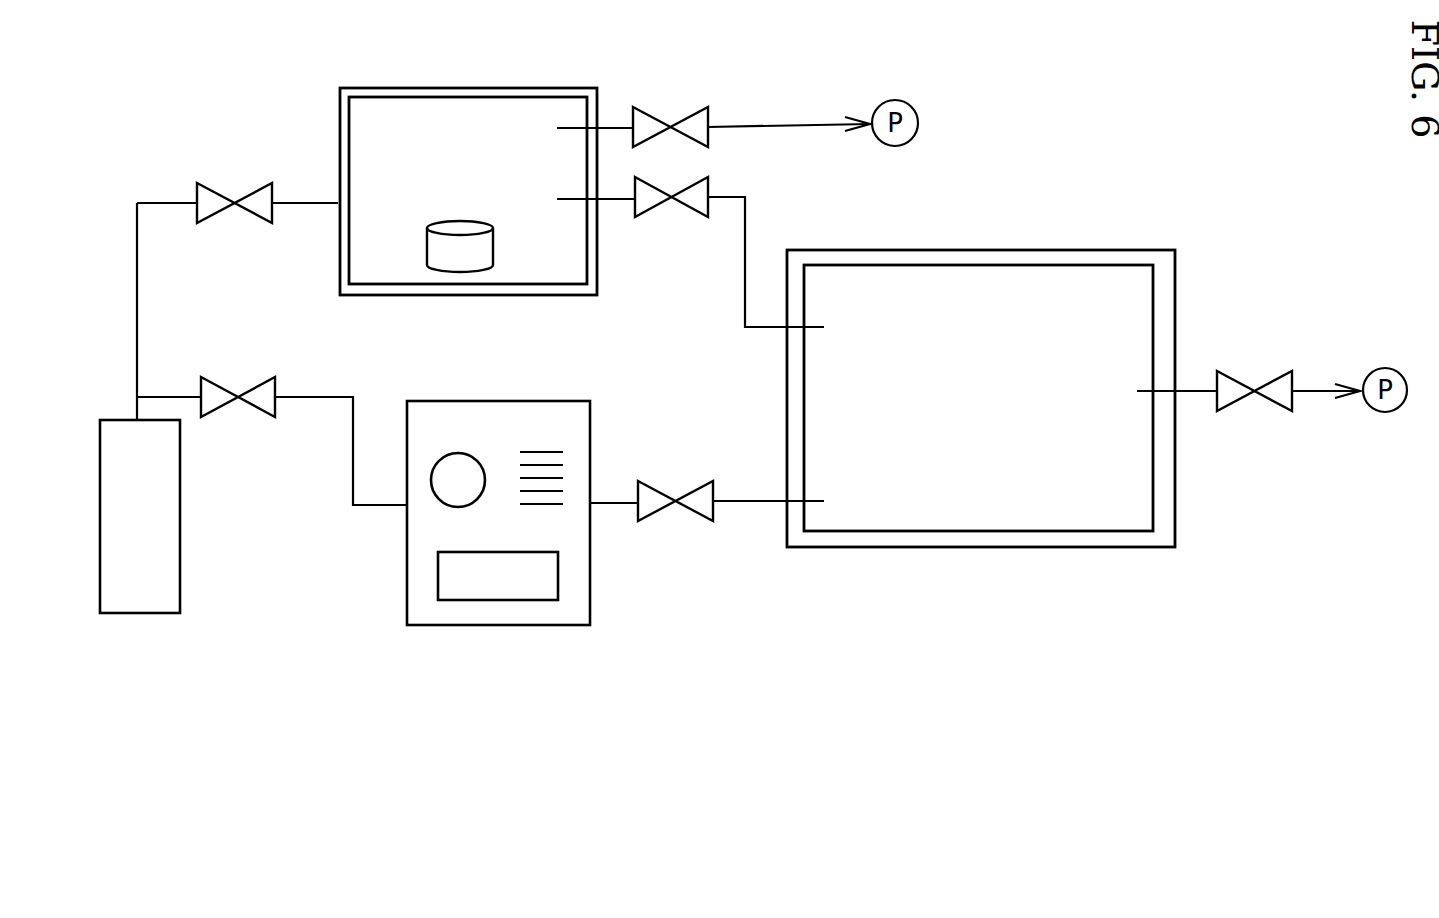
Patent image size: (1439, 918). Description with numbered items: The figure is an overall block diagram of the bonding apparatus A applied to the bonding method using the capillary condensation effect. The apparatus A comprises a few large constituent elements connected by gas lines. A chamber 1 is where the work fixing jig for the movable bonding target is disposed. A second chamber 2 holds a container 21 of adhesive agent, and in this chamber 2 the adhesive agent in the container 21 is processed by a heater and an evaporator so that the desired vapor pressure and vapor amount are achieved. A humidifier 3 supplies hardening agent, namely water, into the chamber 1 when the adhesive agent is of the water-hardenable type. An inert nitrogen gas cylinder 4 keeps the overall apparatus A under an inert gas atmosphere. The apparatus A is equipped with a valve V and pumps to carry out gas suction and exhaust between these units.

The chamber 1 is at (1012, 293).
The chamber 2 is at (487, 113).
The container 21 is at (463, 262).
The humidifier 3 is at (578, 590).
The gas cylinder 4 is at (167, 590).
The valve V is at (234, 185).
The bonding apparatus A is at (1142, 80).